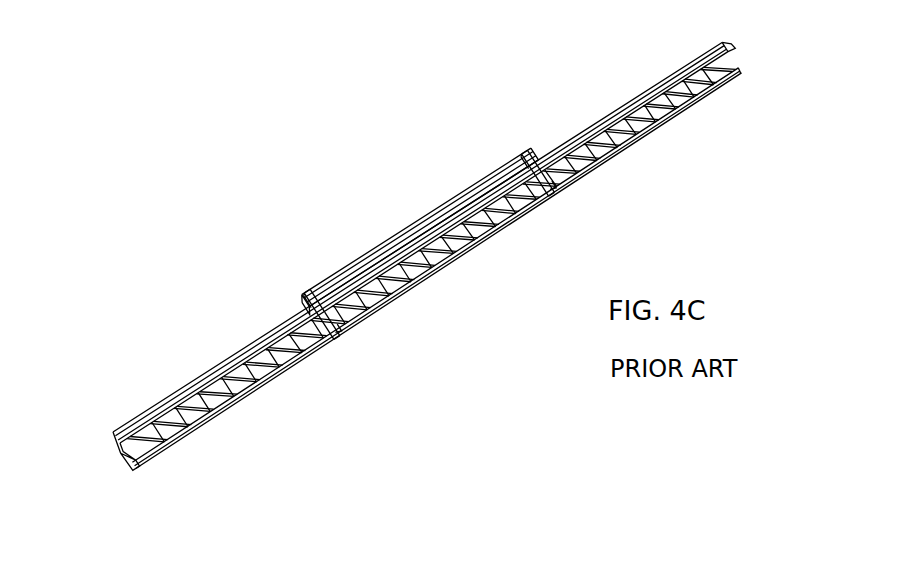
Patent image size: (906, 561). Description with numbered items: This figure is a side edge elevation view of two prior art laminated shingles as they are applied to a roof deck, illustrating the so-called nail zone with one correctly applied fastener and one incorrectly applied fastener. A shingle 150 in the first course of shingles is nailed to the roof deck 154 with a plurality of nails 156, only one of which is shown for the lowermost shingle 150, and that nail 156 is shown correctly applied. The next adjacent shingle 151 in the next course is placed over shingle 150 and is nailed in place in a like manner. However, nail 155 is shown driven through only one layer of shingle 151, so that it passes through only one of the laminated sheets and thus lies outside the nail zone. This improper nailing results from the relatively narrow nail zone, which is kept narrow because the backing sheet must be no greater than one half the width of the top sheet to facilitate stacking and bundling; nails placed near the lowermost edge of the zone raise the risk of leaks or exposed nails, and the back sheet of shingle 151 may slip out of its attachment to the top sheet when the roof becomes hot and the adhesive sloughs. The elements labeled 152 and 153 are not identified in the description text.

The shingle 150 is at (157, 396).
The next adjacent shingle 151 is at (409, 239).
The upper clip fastener 152 is at (487, 185).
The upper clip fastener 153 is at (302, 309).
The roof deck 154 is at (116, 454).
The nail 155 is at (538, 185).
The nail 156 is at (356, 317).